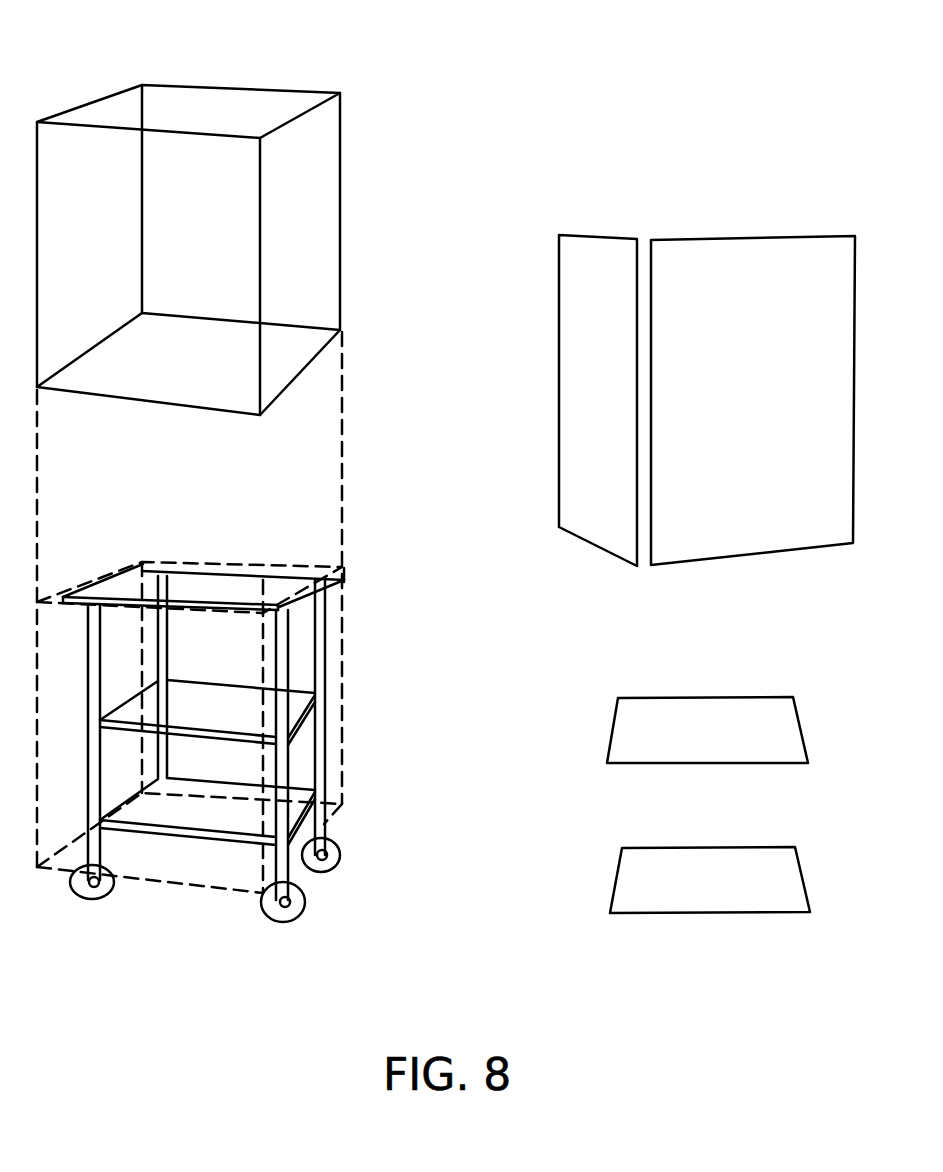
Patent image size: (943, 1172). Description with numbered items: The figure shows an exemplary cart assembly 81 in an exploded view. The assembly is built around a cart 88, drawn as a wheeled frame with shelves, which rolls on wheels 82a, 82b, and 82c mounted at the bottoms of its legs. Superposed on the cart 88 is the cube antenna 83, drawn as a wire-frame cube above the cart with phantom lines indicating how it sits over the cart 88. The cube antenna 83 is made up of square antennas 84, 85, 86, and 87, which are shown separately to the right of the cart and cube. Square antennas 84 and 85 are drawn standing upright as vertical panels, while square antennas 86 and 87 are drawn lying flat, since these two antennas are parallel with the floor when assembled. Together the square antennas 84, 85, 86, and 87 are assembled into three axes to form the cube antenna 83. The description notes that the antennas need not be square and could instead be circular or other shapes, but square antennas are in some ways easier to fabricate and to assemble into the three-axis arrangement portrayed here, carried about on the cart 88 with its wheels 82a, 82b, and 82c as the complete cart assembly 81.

The cart assembly 81 is at (203, 515).
The wheel 82a is at (88, 903).
The wheel 82b is at (300, 912).
The wheel 82c is at (341, 850).
The cube antenna 83 is at (208, 85).
The square antenna 84 is at (605, 235).
The square antenna 85 is at (747, 237).
The square antenna 86 is at (710, 697).
The square antenna 87 is at (715, 847).
The cart 88 is at (327, 652).